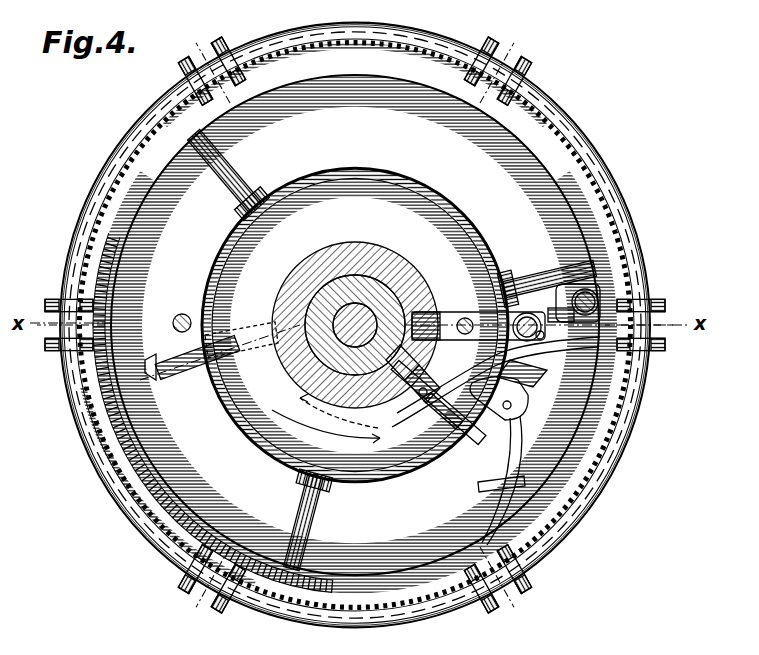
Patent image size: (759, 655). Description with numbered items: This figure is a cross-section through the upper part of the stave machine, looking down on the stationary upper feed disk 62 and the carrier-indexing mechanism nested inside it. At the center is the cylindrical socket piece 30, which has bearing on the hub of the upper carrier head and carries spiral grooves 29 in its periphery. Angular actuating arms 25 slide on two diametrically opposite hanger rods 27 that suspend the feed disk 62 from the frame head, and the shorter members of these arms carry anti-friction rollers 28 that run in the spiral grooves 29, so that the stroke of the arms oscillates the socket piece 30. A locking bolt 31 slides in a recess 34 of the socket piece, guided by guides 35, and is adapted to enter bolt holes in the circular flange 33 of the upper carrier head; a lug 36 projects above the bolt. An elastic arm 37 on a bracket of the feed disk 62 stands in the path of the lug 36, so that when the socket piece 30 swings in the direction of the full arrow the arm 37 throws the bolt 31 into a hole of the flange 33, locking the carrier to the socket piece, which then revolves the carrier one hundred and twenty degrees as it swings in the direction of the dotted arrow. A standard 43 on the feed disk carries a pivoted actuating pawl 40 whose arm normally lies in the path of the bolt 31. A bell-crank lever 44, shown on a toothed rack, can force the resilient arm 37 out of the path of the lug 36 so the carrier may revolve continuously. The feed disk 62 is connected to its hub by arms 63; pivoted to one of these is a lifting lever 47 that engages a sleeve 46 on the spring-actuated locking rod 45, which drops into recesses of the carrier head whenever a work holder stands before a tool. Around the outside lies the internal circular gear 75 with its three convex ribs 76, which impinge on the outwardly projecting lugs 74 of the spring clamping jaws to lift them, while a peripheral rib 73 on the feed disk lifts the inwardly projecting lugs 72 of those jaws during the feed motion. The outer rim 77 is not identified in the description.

The angular actuating arm 25 is at (492, 338).
The hanger rod 27 is at (177, 316).
The anti-friction roller 28 is at (443, 312).
The spiral groove 29 is at (440, 305).
The socket piece 30 is at (355, 325).
The locking bolt 31 is at (428, 434).
The circular flange 33 is at (228, 258).
The recess 34 is at (326, 424).
The guide 35 is at (432, 388).
The lug 36 is at (410, 412).
The elastic arm 37 is at (478, 396).
The actuating pawl 40 is at (208, 382).
The standard 43 is at (186, 372).
The bell-crank lever 44 is at (515, 453).
The locking rod 45 is at (588, 316).
The sleeve 46 is at (582, 288).
The lifting lever 47 is at (562, 324).
The feed disk 62 is at (355, 330).
The hub arm 63 is at (226, 178).
The inwardly projecting lug 72 is at (486, 82).
The rib 73 is at (180, 520).
The outwardly projecting lug 74 is at (496, 55).
The internal circular gear 75 is at (577, 527).
The convex rib 76 is at (233, 48).
The rim 77 is at (602, 163).